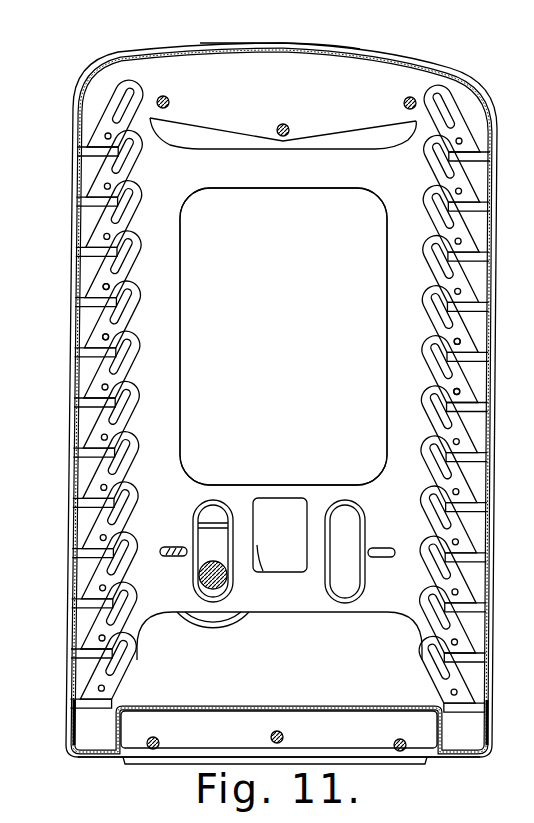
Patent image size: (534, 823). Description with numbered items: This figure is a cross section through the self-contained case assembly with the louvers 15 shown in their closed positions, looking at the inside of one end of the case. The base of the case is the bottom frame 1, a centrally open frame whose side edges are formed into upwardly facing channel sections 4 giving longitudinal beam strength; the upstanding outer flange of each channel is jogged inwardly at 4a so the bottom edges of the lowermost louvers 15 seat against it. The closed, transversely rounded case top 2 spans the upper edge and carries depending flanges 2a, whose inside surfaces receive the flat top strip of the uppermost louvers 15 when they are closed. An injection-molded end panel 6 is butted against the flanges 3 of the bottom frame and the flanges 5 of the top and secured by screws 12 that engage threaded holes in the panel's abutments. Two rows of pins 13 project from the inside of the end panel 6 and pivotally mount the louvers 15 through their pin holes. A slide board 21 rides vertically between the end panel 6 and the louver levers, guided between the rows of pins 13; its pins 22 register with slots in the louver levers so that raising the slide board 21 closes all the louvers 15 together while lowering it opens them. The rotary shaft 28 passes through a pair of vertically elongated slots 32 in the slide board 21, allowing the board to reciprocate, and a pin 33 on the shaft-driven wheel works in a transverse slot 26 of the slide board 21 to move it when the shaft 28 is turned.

The bottom frame 1 is at (305, 710).
The case top 2 is at (358, 61).
The depending flanges 2a is at (112, 105).
The flanges 3 is at (362, 743).
The channel sections 4 is at (66, 733).
The inward jog 4a is at (78, 704).
The depending flanges 5 is at (280, 61).
The end panels 6 is at (287, 363).
The screws 12 is at (170, 101).
The pins 13 is at (109, 287).
The louvers 15 is at (75, 250).
The slide boards 21 is at (258, 180).
The pins 22 is at (131, 145).
The transverse slots 26 is at (166, 557).
The rotary shaft 28 is at (213, 589).
The vertically elongated slots 32 is at (340, 513).
The pin 33 is at (176, 557).